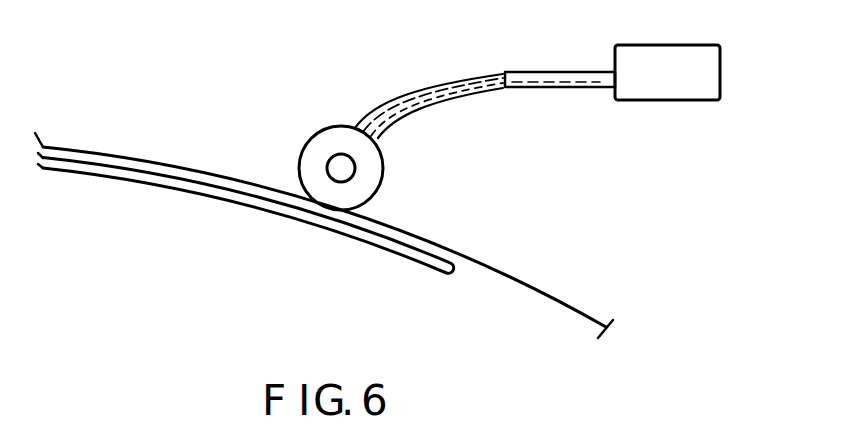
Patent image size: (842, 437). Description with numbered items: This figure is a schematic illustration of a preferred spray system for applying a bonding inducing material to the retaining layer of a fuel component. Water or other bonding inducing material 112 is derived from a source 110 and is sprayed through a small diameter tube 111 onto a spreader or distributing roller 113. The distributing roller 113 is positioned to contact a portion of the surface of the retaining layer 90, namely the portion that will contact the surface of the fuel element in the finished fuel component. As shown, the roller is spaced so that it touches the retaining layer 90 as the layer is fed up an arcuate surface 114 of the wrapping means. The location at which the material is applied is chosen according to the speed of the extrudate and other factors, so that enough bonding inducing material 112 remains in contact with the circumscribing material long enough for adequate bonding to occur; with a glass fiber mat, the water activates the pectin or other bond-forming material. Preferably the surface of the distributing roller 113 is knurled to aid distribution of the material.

The retaining layer 90 is at (523, 287).
The source 110 is at (668, 90).
The small diameter tube 111 is at (567, 88).
The bonding inducing material 112 is at (438, 84).
The distributing roller 113 is at (323, 147).
The arcuate surface 114 is at (186, 186).